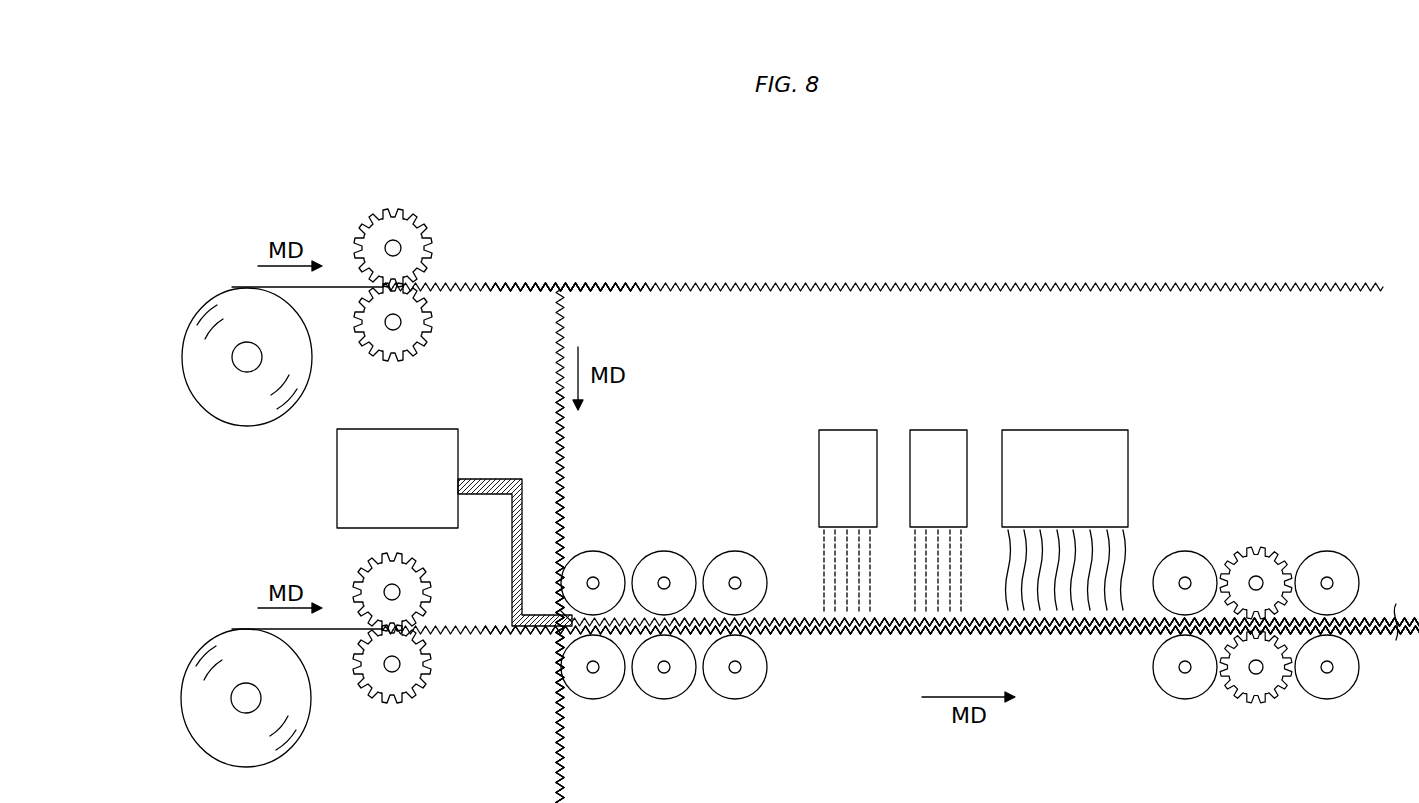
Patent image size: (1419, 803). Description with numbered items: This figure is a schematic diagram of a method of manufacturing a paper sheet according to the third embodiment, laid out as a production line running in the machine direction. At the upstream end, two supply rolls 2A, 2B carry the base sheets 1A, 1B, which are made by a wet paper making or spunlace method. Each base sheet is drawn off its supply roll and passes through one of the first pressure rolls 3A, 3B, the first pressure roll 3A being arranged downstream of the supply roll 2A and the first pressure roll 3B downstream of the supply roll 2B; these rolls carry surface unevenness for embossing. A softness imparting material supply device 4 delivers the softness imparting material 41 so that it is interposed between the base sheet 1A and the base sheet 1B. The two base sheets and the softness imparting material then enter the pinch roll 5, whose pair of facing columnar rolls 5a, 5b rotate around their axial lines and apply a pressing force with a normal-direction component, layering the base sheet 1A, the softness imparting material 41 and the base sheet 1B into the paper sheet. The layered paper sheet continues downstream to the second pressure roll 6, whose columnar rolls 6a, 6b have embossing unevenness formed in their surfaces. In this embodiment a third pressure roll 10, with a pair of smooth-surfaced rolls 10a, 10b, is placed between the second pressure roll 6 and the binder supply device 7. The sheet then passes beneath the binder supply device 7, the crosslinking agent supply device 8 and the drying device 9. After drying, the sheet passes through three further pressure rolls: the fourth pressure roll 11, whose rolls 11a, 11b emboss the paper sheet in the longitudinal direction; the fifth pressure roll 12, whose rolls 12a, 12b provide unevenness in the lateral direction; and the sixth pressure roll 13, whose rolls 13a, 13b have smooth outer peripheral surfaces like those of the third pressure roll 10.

The base sheet 1A is at (488, 282).
The base sheet 1B is at (478, 634).
The supply roll 2A is at (212, 292).
The supply roll 2B is at (212, 634).
The first pressure roll 3A is at (412, 218).
The first pressure roll 3B is at (418, 690).
The softness imparting material supply device 4 is at (432, 430).
The softness imparting material 41 is at (487, 479).
The pinch roll 5 is at (607, 602).
The roll 5a is at (614, 582).
The roll 5b is at (612, 676).
The second pressure roll 6 is at (679, 602).
The roll 6a is at (685, 582).
The roll 6b is at (685, 676).
The third pressure roll 10 is at (756, 602).
The roll 10a is at (756, 582).
The roll 10b is at (756, 676).
The binder supply device 7 is at (845, 440).
The crosslinking agent supply device 8 is at (937, 440).
The drying device 9 is at (1061, 440).
The fourth pressure roll 11 is at (1208, 602).
The roll 11a is at (1206, 580).
The roll 11b is at (1206, 676).
The fifth pressure roll 12 is at (1277, 602).
The roll 12a is at (1279, 580).
The roll 12b is at (1277, 676).
The sixth pressure roll 13 is at (1349, 602).
The roll 13a is at (1349, 580).
The roll 13b is at (1348, 676).